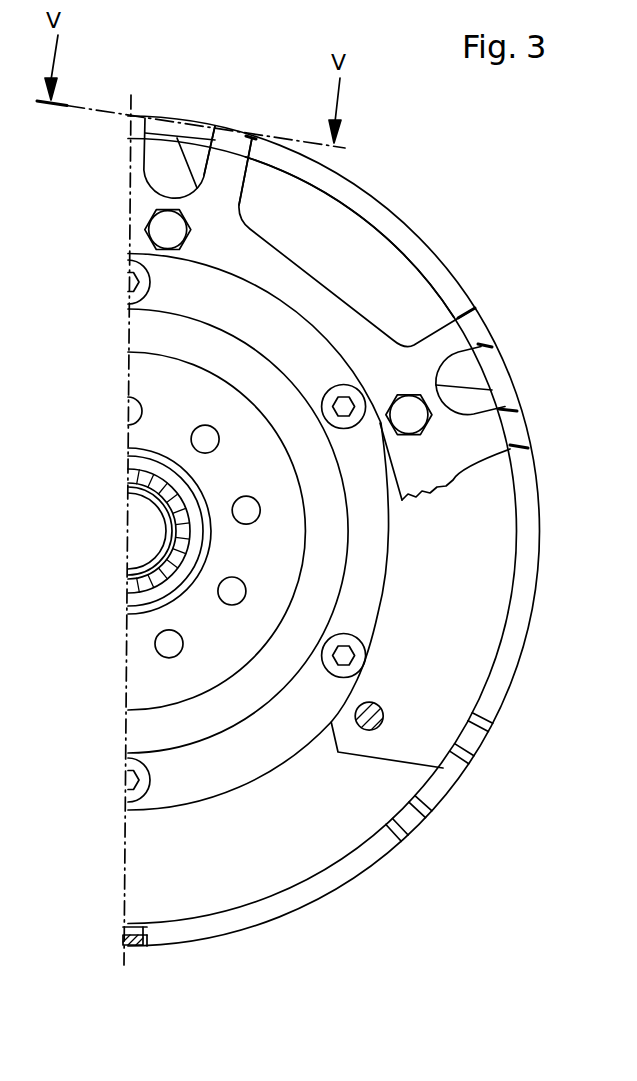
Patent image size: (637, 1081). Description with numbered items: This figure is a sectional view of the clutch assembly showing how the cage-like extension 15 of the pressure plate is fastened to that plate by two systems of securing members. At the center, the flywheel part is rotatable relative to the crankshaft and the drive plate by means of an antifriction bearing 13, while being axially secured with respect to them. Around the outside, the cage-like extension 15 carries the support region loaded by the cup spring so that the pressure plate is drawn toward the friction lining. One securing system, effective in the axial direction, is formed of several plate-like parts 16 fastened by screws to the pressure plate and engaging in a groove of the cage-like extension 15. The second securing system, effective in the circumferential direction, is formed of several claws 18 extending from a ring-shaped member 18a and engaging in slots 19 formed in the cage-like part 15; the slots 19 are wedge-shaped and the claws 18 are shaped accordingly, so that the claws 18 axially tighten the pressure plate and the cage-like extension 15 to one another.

The antifriction bearing 13 is at (165, 483).
The cage-like extension 15 is at (308, 892).
The plate-like parts 16 is at (455, 533).
The claws 18 is at (147, 118).
The ring-shaped member 18a is at (313, 292).
The slots 19 is at (482, 347).